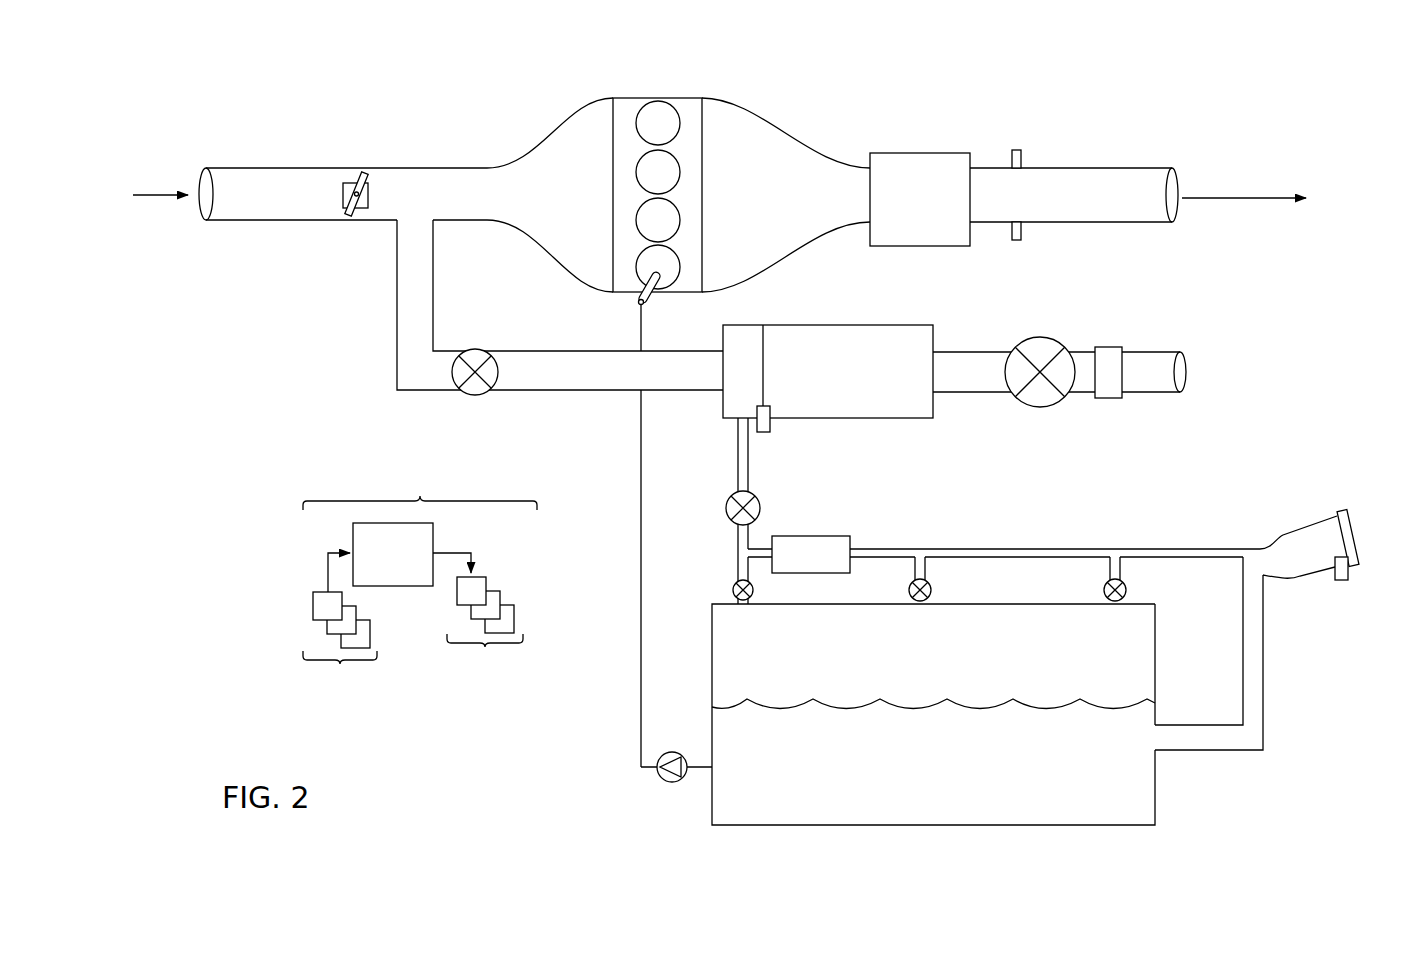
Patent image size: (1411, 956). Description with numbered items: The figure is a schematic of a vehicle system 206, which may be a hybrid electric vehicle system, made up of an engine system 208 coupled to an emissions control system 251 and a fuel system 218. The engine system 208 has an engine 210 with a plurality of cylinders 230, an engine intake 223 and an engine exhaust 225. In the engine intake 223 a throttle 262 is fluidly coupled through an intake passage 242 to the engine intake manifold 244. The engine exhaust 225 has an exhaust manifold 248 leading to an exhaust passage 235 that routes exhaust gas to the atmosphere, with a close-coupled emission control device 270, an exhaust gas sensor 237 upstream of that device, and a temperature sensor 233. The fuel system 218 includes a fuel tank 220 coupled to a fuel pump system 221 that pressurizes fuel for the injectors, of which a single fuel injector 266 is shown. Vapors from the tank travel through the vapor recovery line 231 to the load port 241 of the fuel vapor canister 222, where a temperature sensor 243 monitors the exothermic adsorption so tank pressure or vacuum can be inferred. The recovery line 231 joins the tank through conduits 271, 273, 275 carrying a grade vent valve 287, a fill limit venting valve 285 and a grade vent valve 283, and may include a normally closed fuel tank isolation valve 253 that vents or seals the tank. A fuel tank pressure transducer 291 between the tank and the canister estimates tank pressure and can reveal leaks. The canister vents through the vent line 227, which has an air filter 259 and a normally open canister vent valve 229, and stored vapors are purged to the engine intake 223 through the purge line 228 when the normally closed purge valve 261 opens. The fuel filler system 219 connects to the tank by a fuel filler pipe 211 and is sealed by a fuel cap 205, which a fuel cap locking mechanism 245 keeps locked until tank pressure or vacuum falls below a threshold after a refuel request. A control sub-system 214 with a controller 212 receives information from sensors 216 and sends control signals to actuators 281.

The vehicle system 206 is at (214, 99).
The engine intake 223 is at (546, 126).
The engine intake manifold 244 is at (560, 195).
The engine 210 is at (703, 178).
The cylinders 230 is at (678, 117).
The exhaust manifold 248 is at (770, 195).
The engine exhaust 225 is at (861, 107).
The engine system 208 is at (982, 99).
The emission control device 270 is at (909, 153).
The exhaust gas sensor 237 is at (1012, 160).
The temperature sensor 233 is at (1012, 228).
The exhaust passage 235 is at (1126, 168).
The throttle 262 is at (368, 200).
The intake passage 242 is at (386, 222).
The purge line 228 is at (570, 372).
The purge valve 261 is at (478, 350).
The fuel injector 266 is at (650, 300).
The load port 241 is at (744, 325).
The fuel vapor canister 222 is at (934, 347).
The temperature sensor 243 is at (773, 432).
The vent line 227 is at (1059, 372).
The canister vent valve 229 is at (1037, 338).
The air filter 259 is at (1112, 347).
The emissions control system 251 is at (1191, 303).
The vapor recovery line 231 is at (748, 440).
The fuel tank isolation valve 253 is at (760, 507).
The conduit 271 is at (750, 573).
The grade vent valve 287 is at (733, 588).
The fuel tank pressure transducer 291 is at (811, 536).
The actuators 281 is at (1173, 548).
The fill limit venting valve 285 is at (930, 590).
The conduit 273 is at (915, 566).
The grade vent valve 283 is at (1125, 590).
The conduit 275 is at (1110, 566).
The fuel filler pipe 211 is at (1264, 650).
The fuel cap 205 is at (1341, 511).
The fuel filler system 219 is at (1311, 504).
The fuel cap locking mechanism 245 is at (1342, 580).
The fuel tank 220 is at (1155, 695).
The fuel system 218 is at (1201, 786).
The fuel pump system 221 is at (675, 753).
The control sub-system 214 is at (420, 580).
The controller 212 is at (393, 554).
The sensors 216 is at (340, 628).